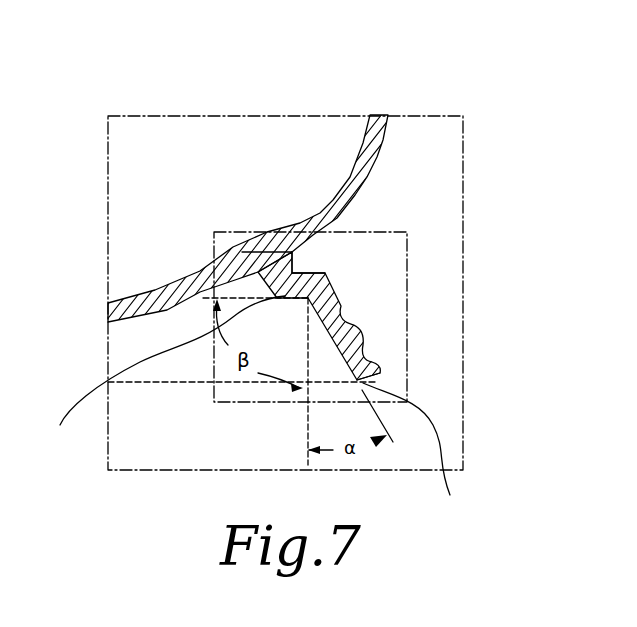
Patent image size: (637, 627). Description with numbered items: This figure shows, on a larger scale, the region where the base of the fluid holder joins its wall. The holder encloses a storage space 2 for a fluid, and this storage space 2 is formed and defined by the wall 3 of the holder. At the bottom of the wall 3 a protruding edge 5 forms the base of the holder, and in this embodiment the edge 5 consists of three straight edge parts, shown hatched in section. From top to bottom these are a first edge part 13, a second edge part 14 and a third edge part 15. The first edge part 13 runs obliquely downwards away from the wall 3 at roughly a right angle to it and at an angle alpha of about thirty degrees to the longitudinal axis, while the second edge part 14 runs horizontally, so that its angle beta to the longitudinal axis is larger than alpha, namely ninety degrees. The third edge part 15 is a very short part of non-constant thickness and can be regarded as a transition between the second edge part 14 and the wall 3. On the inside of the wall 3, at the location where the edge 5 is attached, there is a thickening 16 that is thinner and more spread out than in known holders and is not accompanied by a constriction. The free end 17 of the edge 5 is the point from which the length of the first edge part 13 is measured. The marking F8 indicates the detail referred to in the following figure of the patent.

The storage space 2 is at (225, 137).
The wall 3 is at (383, 153).
The protruding edge 5 is at (386, 317).
The first edge part 13 is at (362, 343).
The second edge part 14 is at (161, 376).
The third edge part 15 is at (296, 268).
The thickening 16 is at (292, 252).
The free end 17 is at (385, 385).
The force F8 is at (410, 451).